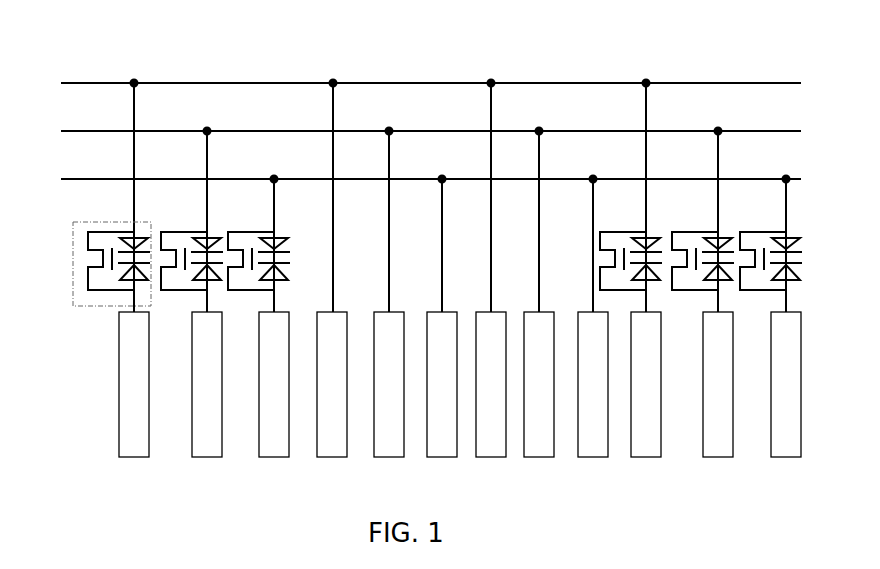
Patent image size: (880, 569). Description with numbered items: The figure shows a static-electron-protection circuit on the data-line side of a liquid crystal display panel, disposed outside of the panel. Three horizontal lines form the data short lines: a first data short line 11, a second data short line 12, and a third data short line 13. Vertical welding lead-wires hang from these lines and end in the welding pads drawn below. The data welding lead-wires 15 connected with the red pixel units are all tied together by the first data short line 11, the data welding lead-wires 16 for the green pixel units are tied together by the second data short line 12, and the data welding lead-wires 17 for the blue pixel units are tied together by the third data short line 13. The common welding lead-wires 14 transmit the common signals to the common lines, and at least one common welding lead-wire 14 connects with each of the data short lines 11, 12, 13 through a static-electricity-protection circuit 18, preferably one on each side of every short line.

The first data short line 11 is at (81, 83).
The second data short line 12 is at (80, 131).
The third data short line 13 is at (87, 179).
The common welding lead-wire 14 is at (120, 390).
The data welding lead-wire 15 is at (335, 312).
The data welding lead-wire 16 is at (392, 312).
The data welding lead-wire 17 is at (448, 312).
The static-electricity-protection circuit 18 is at (75, 265).